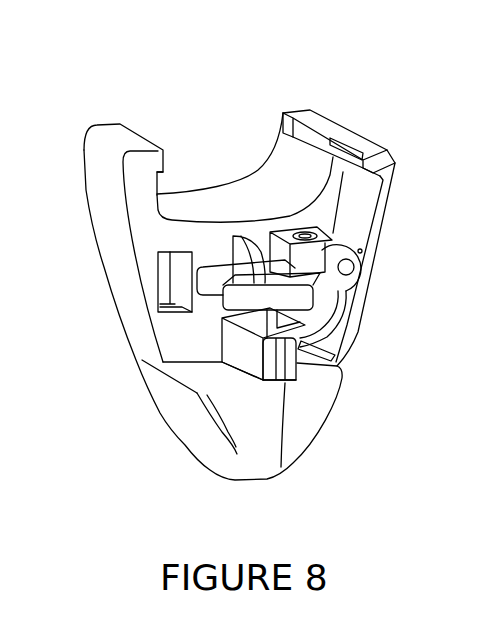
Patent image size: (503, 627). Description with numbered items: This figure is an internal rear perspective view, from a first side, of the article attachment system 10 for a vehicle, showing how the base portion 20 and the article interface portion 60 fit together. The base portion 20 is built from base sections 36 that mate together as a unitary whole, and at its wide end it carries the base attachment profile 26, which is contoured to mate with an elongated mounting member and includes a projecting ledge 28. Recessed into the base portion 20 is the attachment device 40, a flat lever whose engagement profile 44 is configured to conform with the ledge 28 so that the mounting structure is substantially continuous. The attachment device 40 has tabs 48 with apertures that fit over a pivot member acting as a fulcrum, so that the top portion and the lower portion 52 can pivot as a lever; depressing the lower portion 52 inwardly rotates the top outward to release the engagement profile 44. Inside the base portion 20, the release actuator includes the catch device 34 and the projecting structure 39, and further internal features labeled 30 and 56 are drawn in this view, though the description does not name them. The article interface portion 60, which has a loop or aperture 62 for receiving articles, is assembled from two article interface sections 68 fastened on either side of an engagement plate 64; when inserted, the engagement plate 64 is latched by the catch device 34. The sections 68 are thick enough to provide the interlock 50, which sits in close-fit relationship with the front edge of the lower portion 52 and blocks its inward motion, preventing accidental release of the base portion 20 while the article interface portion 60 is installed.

The attachment system 10 is at (124, 56).
The base portion 20 is at (64, 181).
The base attachment profile 26 is at (243, 148).
The ledge 28 is at (165, 160).
The hood 30 is at (237, 200).
The catch device 34 is at (163, 362).
The base sections 36 is at (103, 228).
The projecting structure 39 is at (207, 285).
The attachment device 40 is at (365, 198).
The engagement profile 44 is at (313, 135).
The tabs 48 is at (355, 283).
The interlock 50 is at (247, 354).
The lower portion 52 is at (313, 368).
The spring 56 is at (343, 323).
The article interface portion 60 is at (301, 486).
The aperture 62 is at (200, 416).
The engagement plate 64 is at (240, 253).
The article interface sections 68 is at (227, 465).